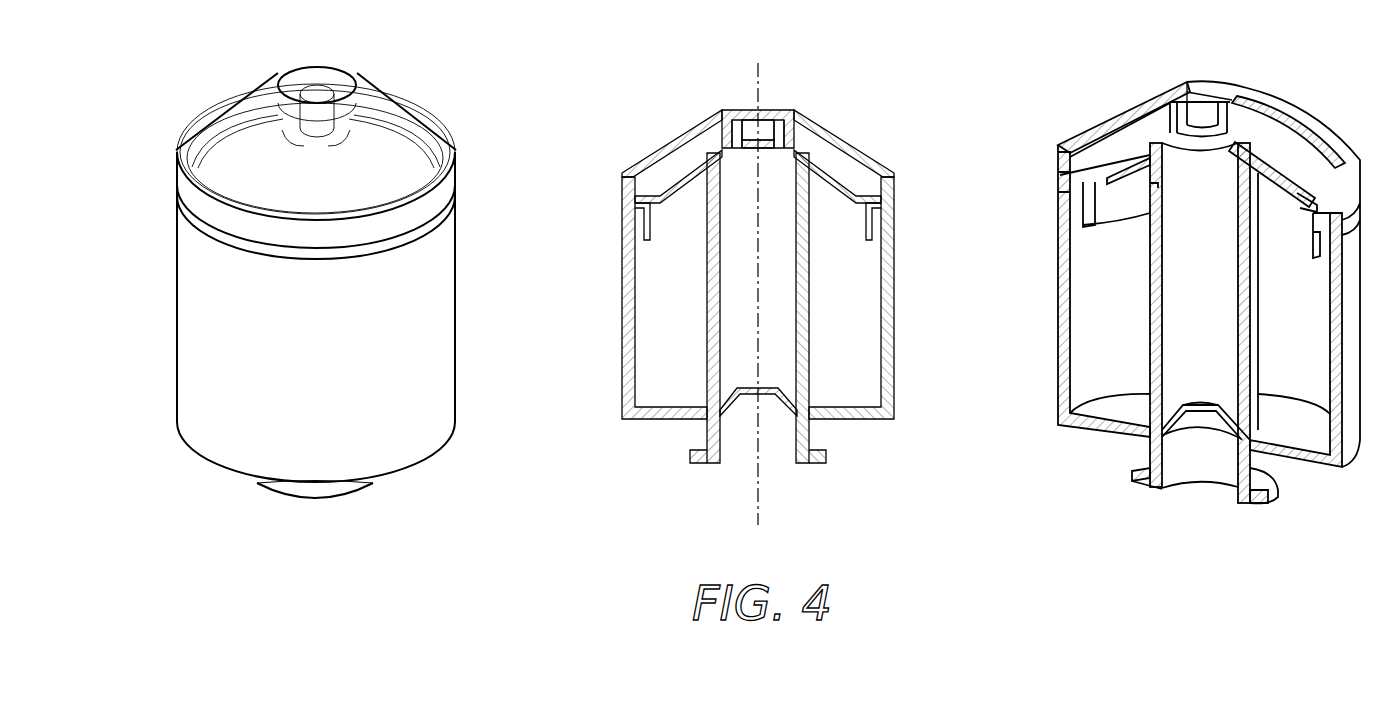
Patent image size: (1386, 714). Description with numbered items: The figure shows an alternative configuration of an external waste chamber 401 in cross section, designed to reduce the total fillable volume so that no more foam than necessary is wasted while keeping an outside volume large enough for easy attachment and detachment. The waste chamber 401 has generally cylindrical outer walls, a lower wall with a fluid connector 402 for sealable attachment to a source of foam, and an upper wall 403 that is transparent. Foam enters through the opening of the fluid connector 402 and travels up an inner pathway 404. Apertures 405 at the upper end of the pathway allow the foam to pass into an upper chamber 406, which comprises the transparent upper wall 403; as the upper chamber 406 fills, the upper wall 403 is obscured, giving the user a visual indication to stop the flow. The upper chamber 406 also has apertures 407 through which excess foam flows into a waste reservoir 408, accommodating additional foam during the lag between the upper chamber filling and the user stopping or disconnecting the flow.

The external waste chamber 401 is at (186, 300).
The fluid connector 402 is at (288, 489).
The upper wall 403 is at (242, 102).
The inner pathway 404 is at (775, 297).
The apertures 405 is at (718, 133).
The upper chamber 406 is at (833, 162).
The apertures 407 is at (623, 173).
The waste reservoir 408 is at (652, 318).